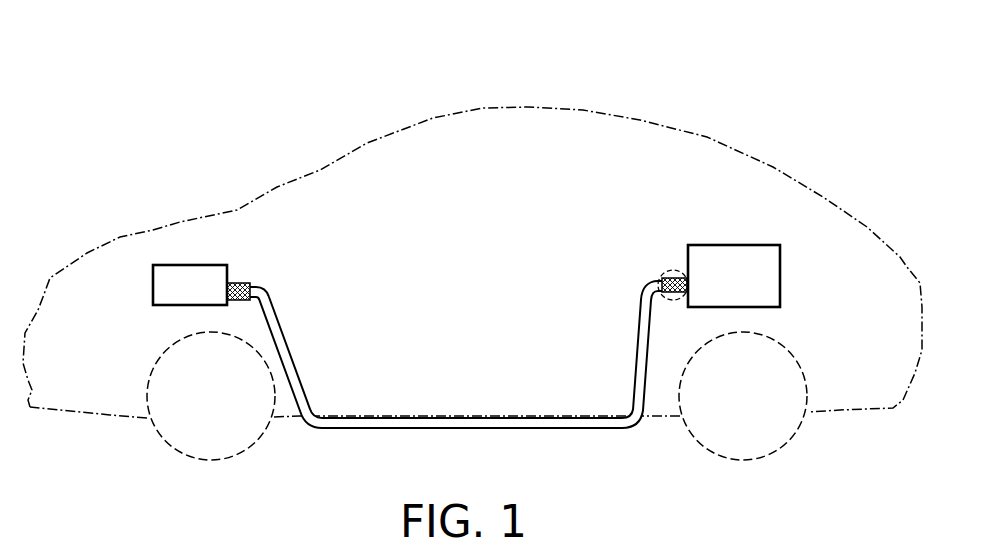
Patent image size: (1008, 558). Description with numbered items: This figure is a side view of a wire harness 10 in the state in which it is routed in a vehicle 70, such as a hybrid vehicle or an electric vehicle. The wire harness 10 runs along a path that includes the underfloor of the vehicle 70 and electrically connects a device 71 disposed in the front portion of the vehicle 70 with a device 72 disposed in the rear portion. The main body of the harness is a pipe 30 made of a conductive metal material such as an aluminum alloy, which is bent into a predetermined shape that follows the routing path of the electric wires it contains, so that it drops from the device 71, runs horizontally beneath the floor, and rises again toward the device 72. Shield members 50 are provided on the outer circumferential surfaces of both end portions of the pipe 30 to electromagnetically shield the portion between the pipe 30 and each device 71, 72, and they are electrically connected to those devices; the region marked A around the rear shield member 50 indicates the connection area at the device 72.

The wire harness 10 is at (456, 351).
The pipe 30 is at (298, 372).
The shield member 50 is at (237, 283).
The vehicle 70 is at (528, 107).
The device 71 is at (192, 265).
The device 72 is at (735, 245).
The region A is at (658, 279).